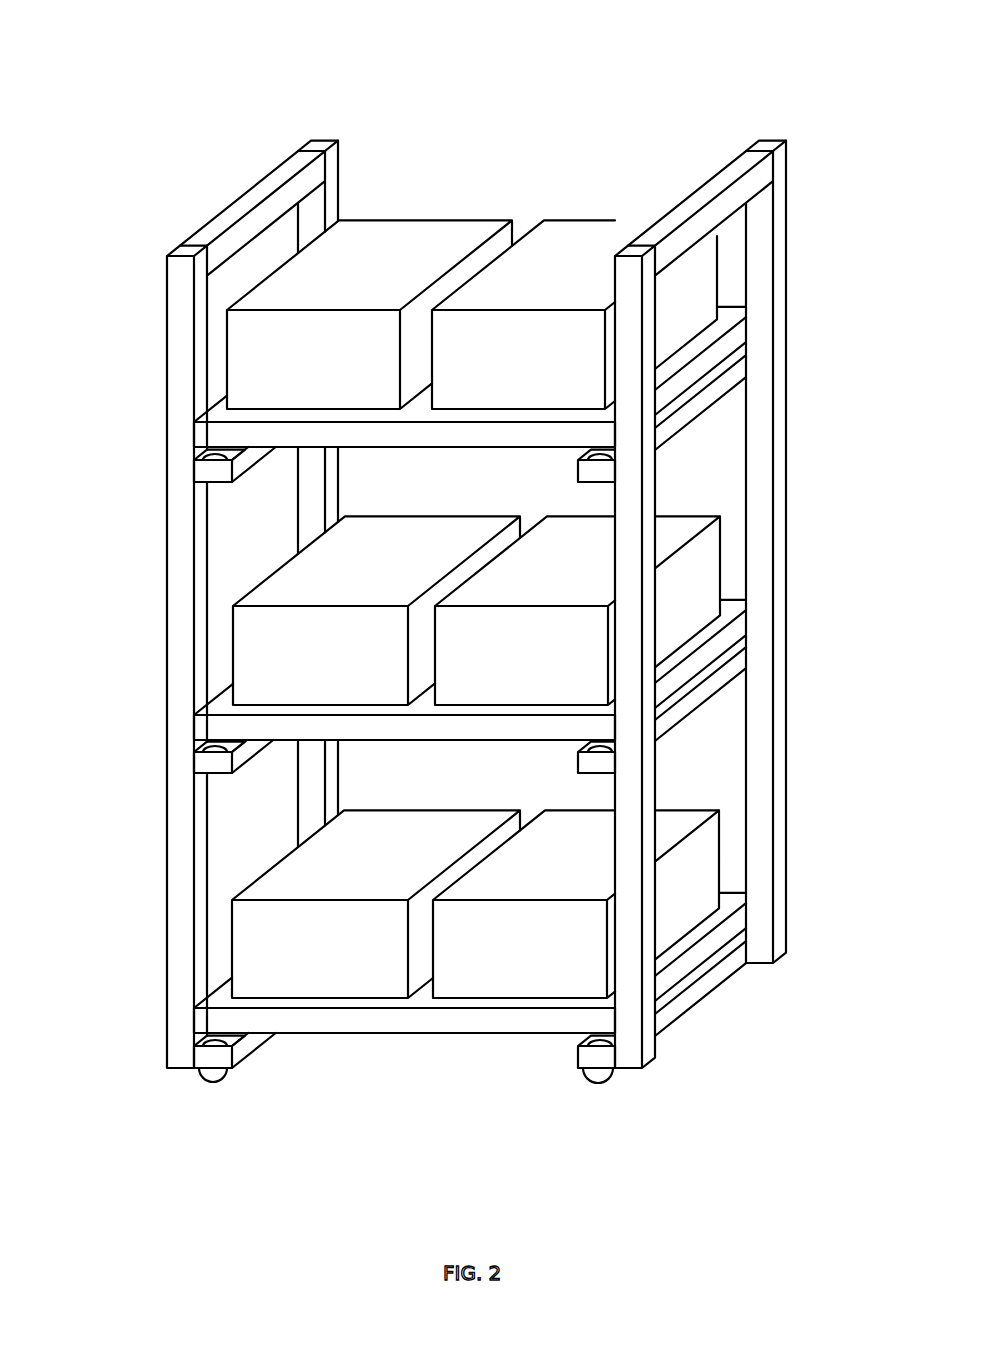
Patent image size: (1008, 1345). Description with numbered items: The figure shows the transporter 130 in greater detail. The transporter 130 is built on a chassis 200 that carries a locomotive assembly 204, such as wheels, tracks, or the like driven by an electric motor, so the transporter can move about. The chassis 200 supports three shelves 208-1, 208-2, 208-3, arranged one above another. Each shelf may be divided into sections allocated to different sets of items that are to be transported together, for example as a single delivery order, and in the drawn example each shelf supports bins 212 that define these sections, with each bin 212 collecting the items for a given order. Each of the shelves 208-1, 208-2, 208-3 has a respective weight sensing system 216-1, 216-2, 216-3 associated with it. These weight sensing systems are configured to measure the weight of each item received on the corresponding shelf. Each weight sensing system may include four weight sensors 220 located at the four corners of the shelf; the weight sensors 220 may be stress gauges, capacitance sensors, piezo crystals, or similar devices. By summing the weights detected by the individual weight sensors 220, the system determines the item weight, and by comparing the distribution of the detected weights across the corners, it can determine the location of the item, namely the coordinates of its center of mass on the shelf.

The transporter 130 is at (226, 105).
The chassis 200 is at (184, 1069).
The locomotive assembly 204 is at (598, 1099).
The shelf 208-1 is at (728, 358).
The shelf 208-2 is at (730, 653).
The shelf 208-3 is at (718, 953).
The bin 212 is at (573, 235).
The weight sensing system 216-1 is at (461, 410).
The weight sensing system 216-2 is at (461, 686).
The weight sensing system 216-3 is at (456, 980).
The weight sensor 220 is at (190, 463).